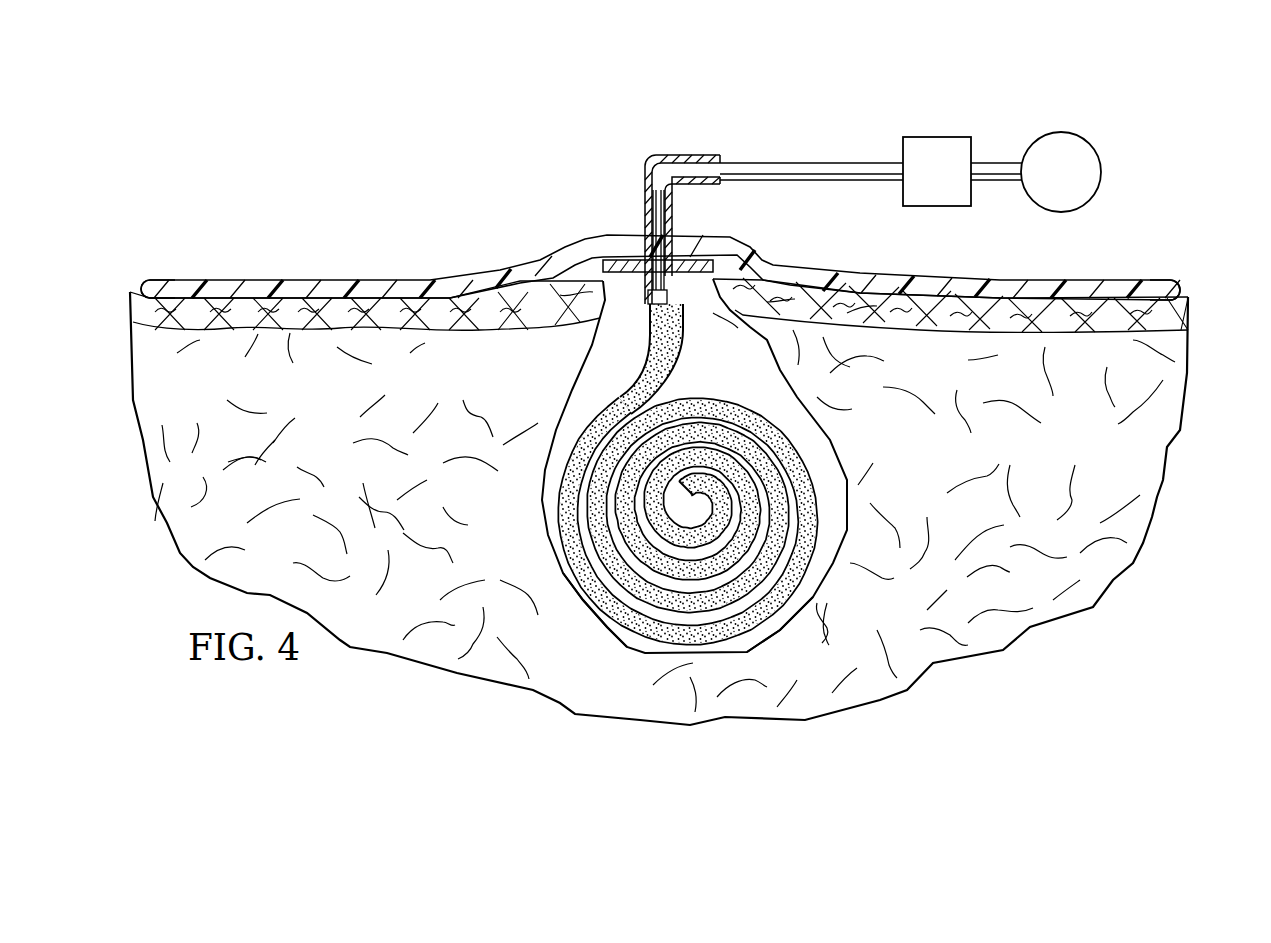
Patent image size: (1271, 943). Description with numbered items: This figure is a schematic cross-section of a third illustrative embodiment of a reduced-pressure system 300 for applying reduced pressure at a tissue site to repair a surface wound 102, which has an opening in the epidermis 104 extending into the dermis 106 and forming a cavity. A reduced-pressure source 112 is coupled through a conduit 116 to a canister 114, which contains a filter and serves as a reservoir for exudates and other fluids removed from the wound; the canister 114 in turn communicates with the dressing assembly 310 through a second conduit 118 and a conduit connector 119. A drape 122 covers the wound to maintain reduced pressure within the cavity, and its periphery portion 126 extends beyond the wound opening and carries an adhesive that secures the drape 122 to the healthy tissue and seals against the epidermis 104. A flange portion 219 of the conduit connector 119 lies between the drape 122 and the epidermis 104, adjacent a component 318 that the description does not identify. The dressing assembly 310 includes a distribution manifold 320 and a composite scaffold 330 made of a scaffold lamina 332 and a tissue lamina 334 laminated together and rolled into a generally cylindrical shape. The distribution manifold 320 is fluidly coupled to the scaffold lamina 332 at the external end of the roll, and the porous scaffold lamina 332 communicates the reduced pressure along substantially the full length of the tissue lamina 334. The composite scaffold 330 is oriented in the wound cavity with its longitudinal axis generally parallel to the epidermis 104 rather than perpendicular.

The reduced-pressure system 300 is at (422, 89).
The dressing assembly 310 is at (440, 171).
The surface wound 102 is at (815, 575).
The epidermis 104 is at (1190, 300).
The dermis 106 is at (1185, 368).
The reduced-pressure source 112 is at (1060, 133).
The canister 114 is at (940, 137).
The conduit 116 is at (1000, 162).
The second conduit 118 is at (838, 162).
The conduit connector 119 is at (650, 158).
The drape 122 is at (296, 283).
The periphery portion 126 is at (187, 279).
The flange portion 219 is at (627, 260).
The flange 318 is at (670, 280).
The distribution manifold 320 is at (687, 297).
The composite scaffold 330 is at (614, 614).
The scaffold lamina 332 is at (648, 628).
The tissue lamina 334 is at (757, 598).